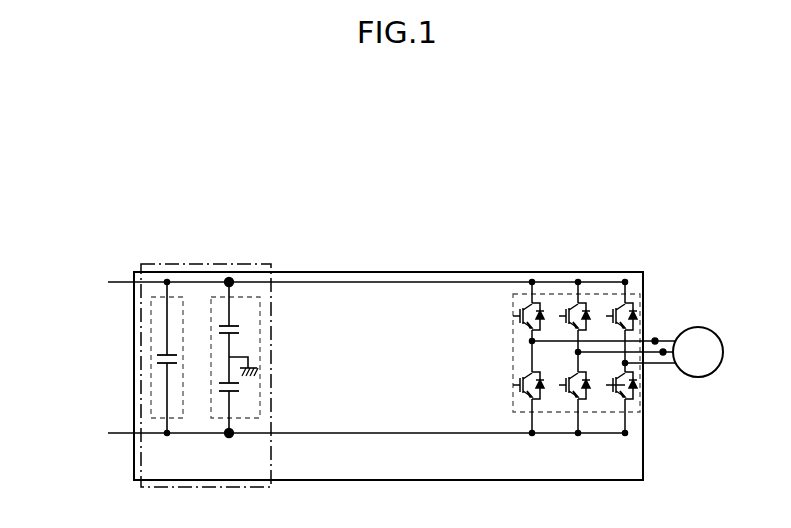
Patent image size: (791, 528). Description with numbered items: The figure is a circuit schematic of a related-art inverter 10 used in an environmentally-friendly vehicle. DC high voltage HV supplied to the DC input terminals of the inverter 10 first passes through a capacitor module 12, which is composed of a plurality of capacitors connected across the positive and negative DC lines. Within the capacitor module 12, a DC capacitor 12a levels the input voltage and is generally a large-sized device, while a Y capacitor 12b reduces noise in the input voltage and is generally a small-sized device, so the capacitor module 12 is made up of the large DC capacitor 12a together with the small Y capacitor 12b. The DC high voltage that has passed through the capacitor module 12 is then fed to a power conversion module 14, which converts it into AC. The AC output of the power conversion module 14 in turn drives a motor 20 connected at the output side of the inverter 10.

The inverter 10 is at (438, 262).
The capacitor module 12 is at (205, 264).
The DC capacitor 12a is at (152, 360).
The Y capacitor 12b is at (243, 290).
The power conversion module 14 is at (597, 294).
The motor 20 is at (700, 327).